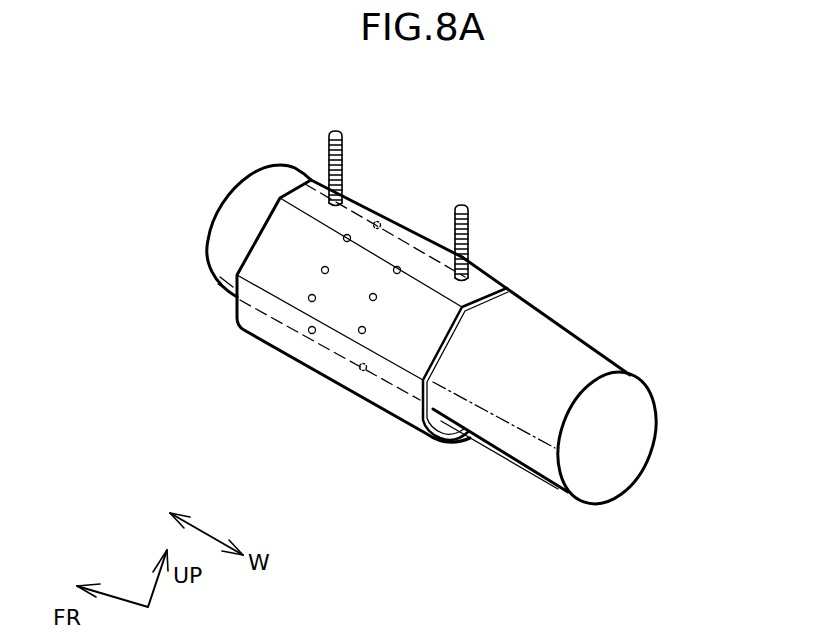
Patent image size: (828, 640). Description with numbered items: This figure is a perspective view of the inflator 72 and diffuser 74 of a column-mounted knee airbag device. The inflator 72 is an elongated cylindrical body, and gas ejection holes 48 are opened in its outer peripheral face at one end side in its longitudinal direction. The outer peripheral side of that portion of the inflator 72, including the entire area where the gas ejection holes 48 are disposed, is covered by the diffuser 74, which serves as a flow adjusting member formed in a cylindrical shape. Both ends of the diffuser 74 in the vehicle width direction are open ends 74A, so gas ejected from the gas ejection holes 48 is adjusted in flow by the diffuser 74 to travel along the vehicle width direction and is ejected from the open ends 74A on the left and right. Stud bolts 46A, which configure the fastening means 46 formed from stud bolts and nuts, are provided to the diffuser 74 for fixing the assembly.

The inflator 72 is at (599, 364).
The diffuser 74 is at (442, 311).
The open ends 74A is at (509, 290).
The gas ejection holes 48 is at (359, 332).
The stud bolts 46A is at (435, 174).
The fastening means 46 is at (462, 204).